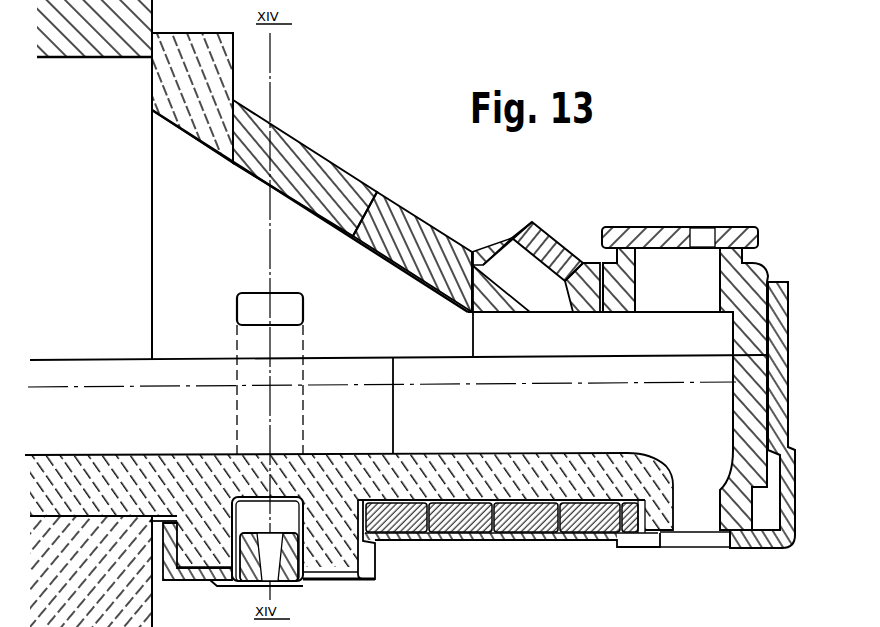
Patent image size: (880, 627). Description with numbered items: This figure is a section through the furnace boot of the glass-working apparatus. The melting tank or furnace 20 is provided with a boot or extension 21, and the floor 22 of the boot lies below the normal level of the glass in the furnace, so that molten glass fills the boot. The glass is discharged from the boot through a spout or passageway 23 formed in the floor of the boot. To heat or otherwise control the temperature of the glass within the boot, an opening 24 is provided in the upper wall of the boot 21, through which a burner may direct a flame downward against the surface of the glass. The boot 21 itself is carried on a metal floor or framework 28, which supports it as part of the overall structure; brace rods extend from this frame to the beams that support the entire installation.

The furnace 20 is at (107, 597).
The boot 21 is at (408, 214).
The floor 22 is at (538, 453).
The spout 23 is at (700, 518).
The opening 24 is at (500, 252).
The metal floor 28 is at (586, 541).